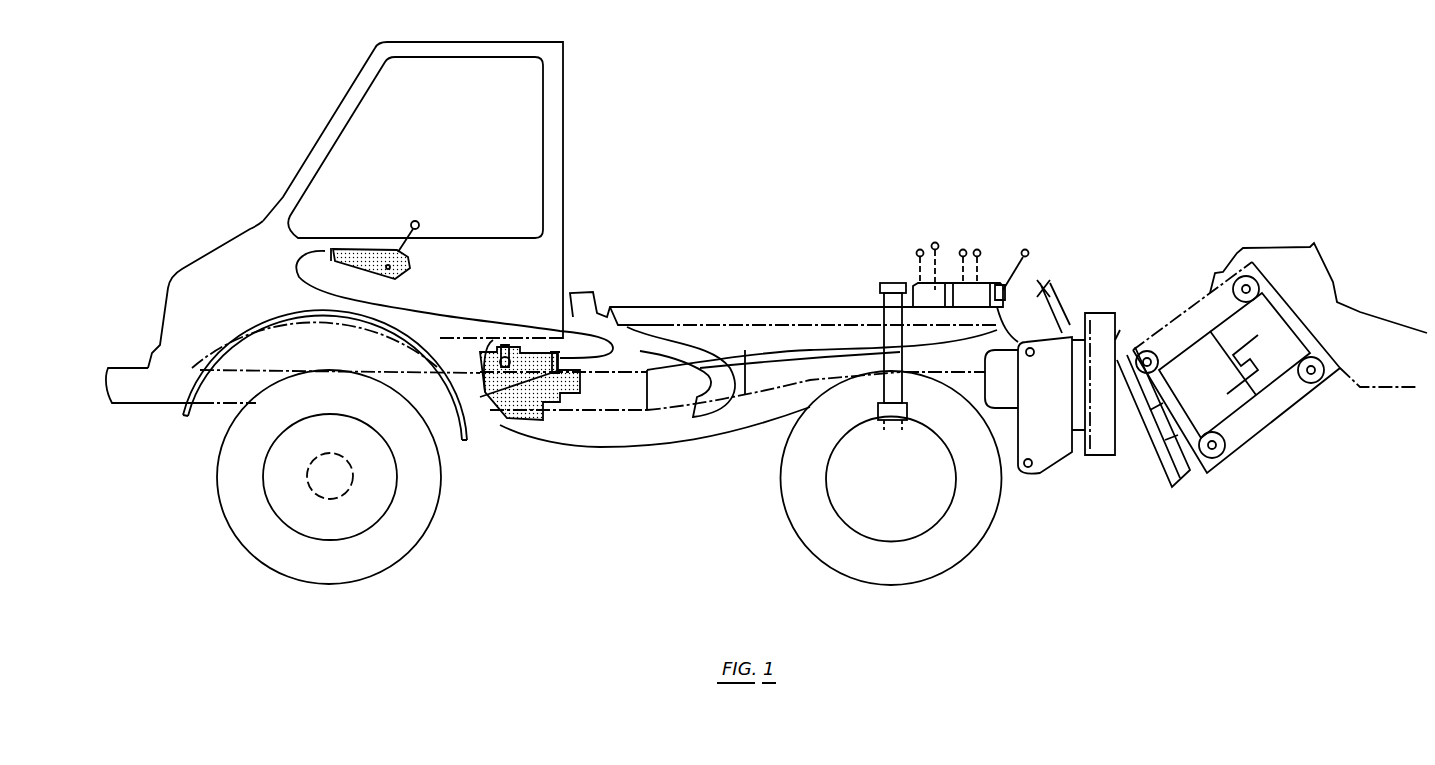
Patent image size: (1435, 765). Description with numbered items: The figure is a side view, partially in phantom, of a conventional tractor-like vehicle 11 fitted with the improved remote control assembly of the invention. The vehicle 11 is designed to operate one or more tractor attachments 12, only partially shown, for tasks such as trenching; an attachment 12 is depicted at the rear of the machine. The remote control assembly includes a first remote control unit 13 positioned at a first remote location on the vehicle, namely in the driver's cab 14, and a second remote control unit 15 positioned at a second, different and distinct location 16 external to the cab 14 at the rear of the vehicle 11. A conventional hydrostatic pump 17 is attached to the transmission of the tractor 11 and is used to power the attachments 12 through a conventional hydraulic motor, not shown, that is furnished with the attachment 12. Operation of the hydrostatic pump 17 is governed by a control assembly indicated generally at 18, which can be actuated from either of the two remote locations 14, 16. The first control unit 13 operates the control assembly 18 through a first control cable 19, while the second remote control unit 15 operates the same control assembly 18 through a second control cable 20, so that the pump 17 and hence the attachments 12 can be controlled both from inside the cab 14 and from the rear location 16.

The tractor-like vehicle 11 is at (270, 113).
The tractor attachment 12 is at (1238, 248).
The first remote control unit 13 is at (392, 230).
The driver's cab 14 is at (283, 202).
The second remote control unit 15 is at (1004, 251).
The second location 16 is at (1010, 327).
The hydrostatic pump 17 is at (517, 430).
The control assembly 18 is at (520, 350).
The first control cable 19 is at (441, 315).
The second control cable 20 is at (823, 352).